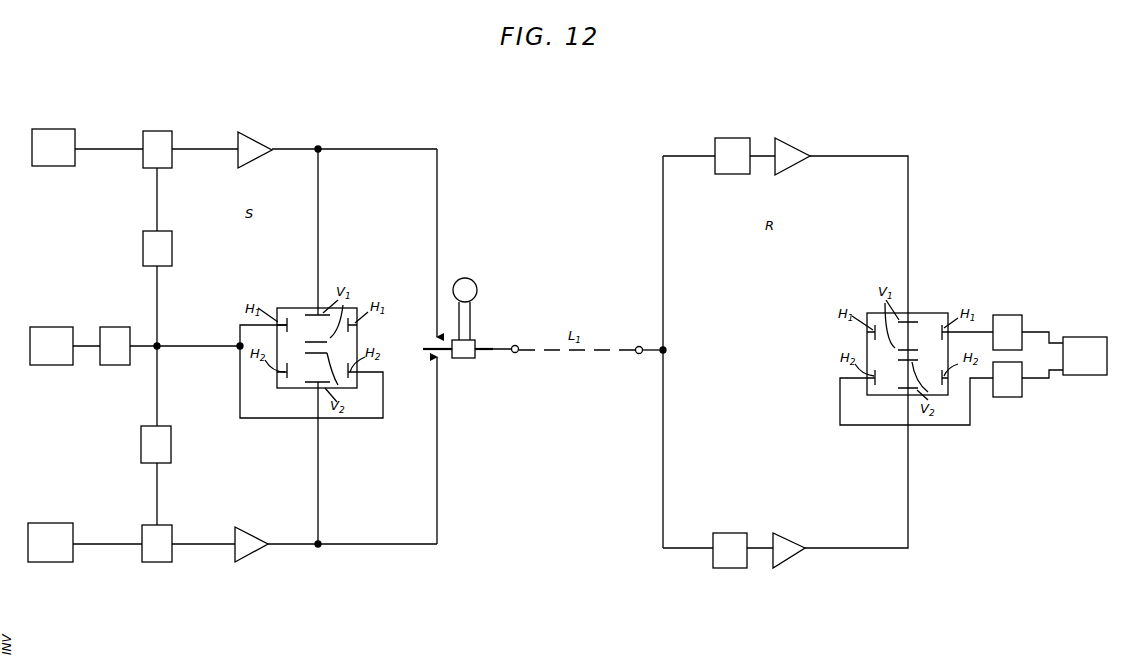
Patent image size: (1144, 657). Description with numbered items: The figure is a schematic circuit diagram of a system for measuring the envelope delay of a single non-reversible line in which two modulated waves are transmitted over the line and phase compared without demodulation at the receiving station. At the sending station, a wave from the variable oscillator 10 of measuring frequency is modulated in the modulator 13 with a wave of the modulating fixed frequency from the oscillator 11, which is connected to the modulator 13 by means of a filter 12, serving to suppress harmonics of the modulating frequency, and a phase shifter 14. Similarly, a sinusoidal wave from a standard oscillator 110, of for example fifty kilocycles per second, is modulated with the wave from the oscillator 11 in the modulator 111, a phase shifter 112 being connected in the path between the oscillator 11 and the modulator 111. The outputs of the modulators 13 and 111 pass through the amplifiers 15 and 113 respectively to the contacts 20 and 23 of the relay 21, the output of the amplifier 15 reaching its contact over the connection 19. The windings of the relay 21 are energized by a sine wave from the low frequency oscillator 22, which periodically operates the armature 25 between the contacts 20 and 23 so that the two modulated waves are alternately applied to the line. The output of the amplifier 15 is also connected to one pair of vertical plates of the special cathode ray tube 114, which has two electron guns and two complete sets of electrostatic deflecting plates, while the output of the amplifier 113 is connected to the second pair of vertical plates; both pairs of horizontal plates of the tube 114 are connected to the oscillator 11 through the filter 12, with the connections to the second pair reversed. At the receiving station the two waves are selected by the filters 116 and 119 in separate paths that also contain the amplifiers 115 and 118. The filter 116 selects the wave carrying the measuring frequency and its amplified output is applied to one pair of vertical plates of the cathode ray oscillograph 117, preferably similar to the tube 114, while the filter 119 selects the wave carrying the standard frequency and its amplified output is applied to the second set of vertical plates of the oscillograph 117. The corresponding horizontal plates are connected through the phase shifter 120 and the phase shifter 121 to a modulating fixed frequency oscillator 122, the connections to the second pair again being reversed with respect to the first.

The variable oscillator 10 is at (50, 128).
The modulating fixed frequency oscillator 11 is at (47, 327).
The filter 12 is at (113, 327).
The modulator 13 is at (160, 131).
The phase shifter 14 is at (172, 252).
The variable amplifier 15 is at (244, 132).
The connection 19 is at (437, 208).
The contact 20 is at (432, 337).
The relay 21 is at (477, 358).
The oscillator 22 is at (471, 281).
The contact 23 is at (440, 360).
The armature 25 is at (423, 349).
The standard oscillator 110 is at (48, 522).
The modulator 111 is at (158, 524).
The phase shifter 112 is at (171, 441).
The amplifier 113 is at (238, 527).
The cathode ray tube 114 is at (288, 308).
The amplifier 115 is at (784, 138).
The filter 116 is at (730, 138).
The cathode ray oscillograph 117 is at (930, 313).
The amplifier 118 is at (780, 533).
The filter 119 is at (722, 533).
The phase shifter 120 is at (1010, 315).
The phase shifter 121 is at (1022, 390).
The modulating fixed frequency oscillator 122 is at (1096, 337).